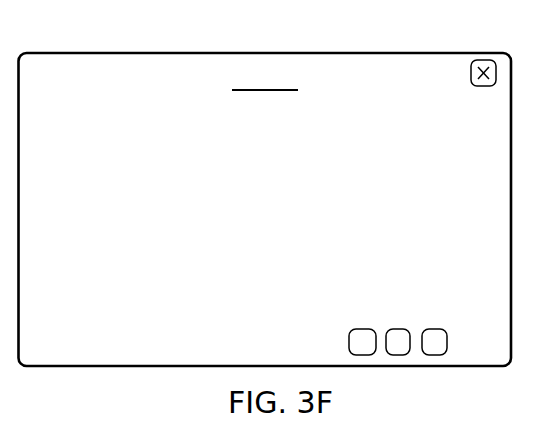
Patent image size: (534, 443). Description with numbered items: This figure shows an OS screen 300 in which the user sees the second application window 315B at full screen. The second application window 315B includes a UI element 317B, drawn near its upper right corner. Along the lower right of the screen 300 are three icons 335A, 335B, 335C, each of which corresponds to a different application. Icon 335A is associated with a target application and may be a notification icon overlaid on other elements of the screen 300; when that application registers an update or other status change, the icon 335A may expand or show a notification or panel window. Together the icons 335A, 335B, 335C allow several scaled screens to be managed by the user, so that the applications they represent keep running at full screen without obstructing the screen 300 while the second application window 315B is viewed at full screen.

The OS screen 300 is at (91, 38).
The second application window 315B is at (265, 75).
The UI element 317B is at (470, 70).
The icon 335A is at (348, 332).
The icon 335B is at (398, 328).
The icon 335C is at (438, 328).